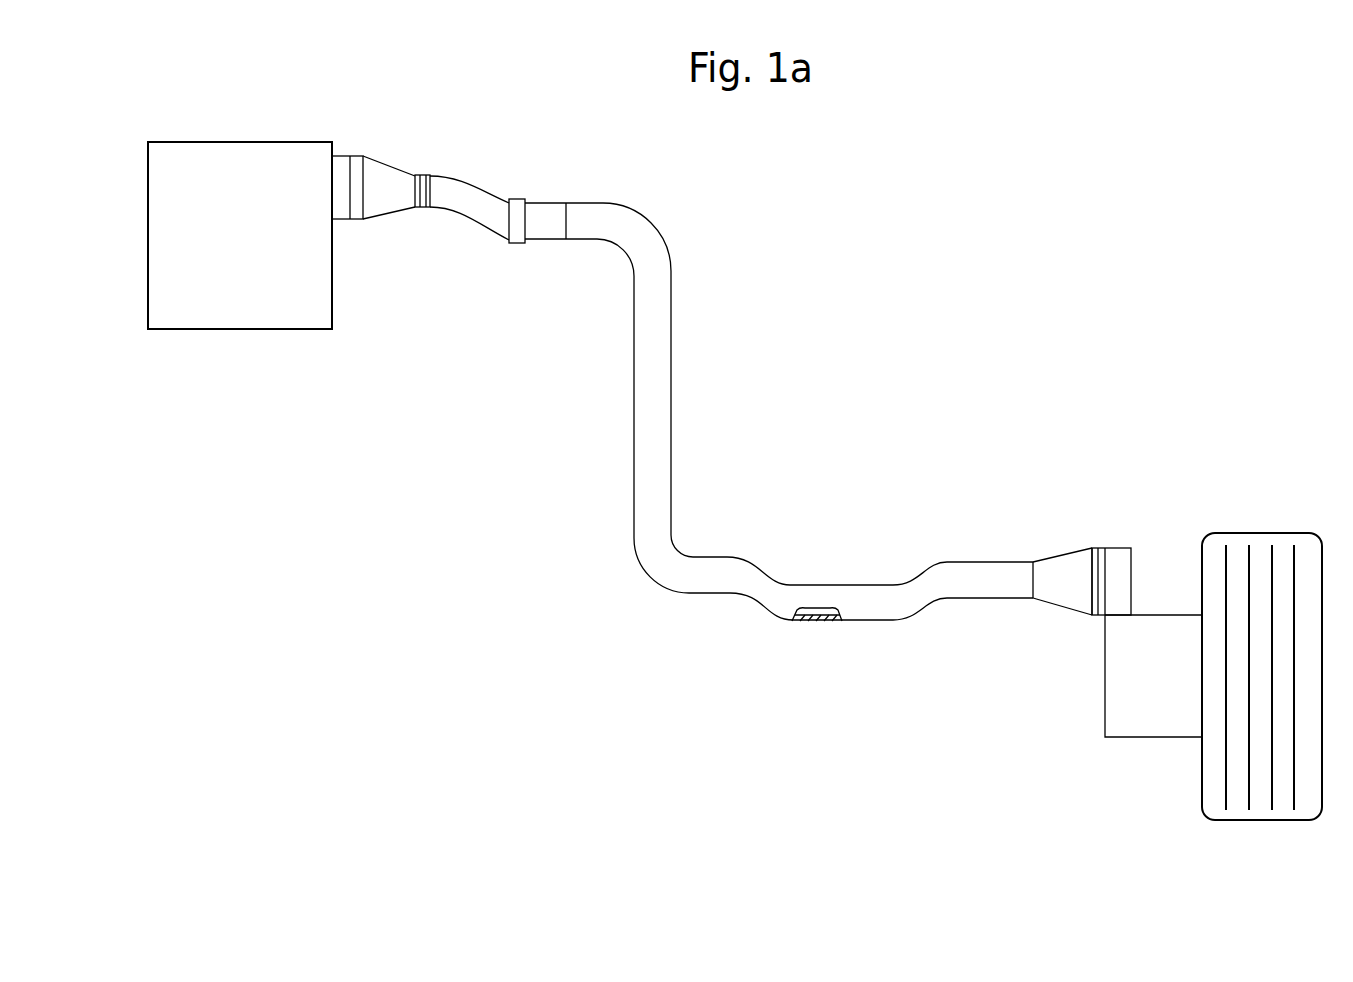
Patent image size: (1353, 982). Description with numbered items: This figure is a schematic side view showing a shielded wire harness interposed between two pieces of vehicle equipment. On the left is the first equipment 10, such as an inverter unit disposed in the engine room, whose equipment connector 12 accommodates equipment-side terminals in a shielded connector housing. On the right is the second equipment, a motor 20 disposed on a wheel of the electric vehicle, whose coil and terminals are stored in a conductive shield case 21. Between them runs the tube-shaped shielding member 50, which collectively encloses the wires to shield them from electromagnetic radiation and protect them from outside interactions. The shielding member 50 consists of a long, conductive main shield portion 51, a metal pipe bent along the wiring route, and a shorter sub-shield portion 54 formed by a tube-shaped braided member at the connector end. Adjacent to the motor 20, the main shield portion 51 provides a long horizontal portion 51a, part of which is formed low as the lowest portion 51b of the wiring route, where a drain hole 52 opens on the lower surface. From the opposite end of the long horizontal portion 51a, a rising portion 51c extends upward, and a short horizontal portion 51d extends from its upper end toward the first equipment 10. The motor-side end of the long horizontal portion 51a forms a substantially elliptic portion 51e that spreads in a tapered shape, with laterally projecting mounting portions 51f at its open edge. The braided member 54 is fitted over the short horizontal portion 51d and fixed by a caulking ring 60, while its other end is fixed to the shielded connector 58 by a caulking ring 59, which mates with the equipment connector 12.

The first equipment 10 is at (249, 346).
The equipment connector 12 is at (343, 208).
The second equipment (motor) 20 is at (1082, 680).
The shield case 21 is at (1120, 557).
The tube-shaped shielding member 50 is at (811, 422).
The main shield portion 51 is at (811, 422).
The long horizontal portion 51a is at (960, 565).
The lowest portion 51b is at (817, 597).
The rising portion 51c is at (657, 413).
The short horizontal portion 51d is at (593, 233).
The substantially elliptic portion 51e is at (1050, 565).
The mounting portion 51f is at (1098, 590).
The drain hole 52 is at (818, 623).
The sub-shield portion (tube-shaped braided member) 54 is at (488, 187).
The shielded connector 58 is at (390, 180).
The caulking ring 59 is at (423, 180).
The caulking ring (clamp) 60 is at (515, 233).